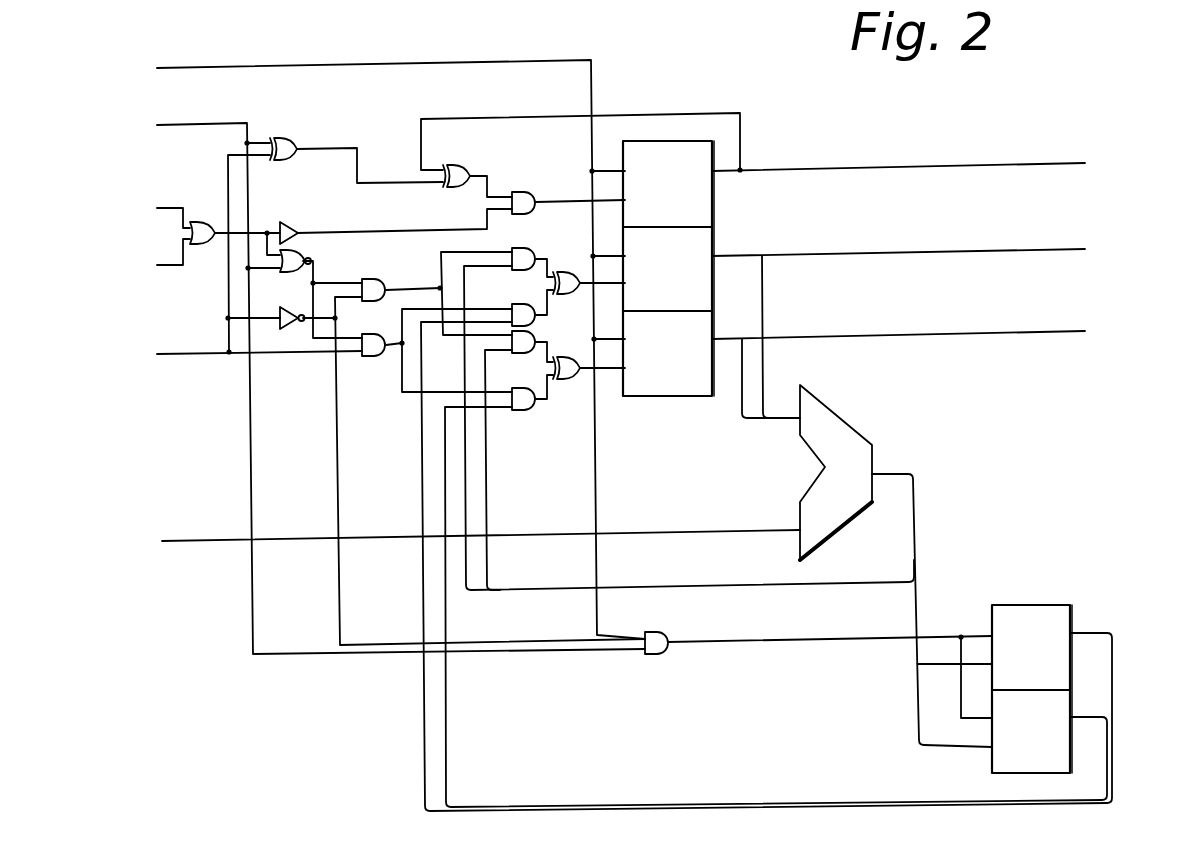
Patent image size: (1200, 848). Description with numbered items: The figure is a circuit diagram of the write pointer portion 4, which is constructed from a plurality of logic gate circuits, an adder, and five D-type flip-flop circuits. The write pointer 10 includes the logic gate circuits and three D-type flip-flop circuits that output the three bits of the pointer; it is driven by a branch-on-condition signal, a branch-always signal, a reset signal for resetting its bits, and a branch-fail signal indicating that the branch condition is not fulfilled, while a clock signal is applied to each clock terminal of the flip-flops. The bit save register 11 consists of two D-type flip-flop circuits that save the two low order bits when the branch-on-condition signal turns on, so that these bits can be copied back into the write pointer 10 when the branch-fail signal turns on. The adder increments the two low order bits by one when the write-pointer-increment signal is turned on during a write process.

The write pointer portion 4 is at (845, 99).
The write pointer 10 is at (750, 229).
The bit save register 11 is at (1110, 615).